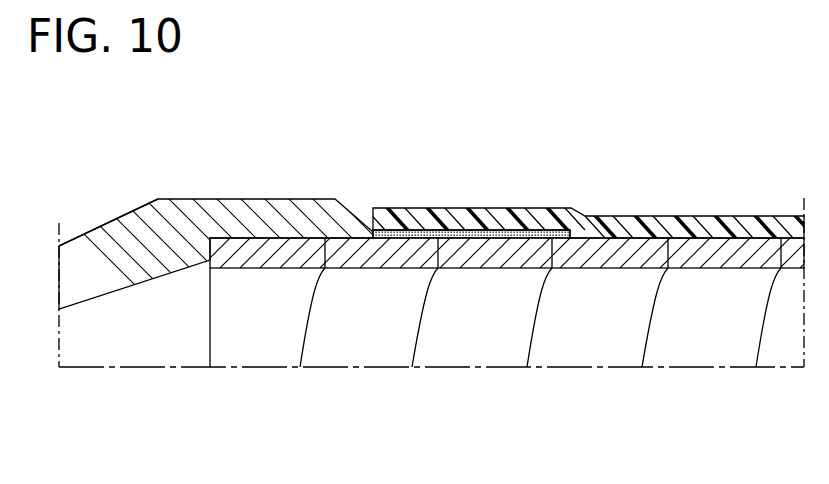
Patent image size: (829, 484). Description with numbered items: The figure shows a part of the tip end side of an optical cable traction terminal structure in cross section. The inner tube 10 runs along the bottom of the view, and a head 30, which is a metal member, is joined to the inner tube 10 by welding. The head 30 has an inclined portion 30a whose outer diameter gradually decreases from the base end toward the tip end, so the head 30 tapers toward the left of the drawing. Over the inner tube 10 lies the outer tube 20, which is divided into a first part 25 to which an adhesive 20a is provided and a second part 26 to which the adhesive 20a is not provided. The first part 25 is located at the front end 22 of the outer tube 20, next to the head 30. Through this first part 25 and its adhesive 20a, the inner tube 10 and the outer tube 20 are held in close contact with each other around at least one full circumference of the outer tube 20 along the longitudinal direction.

The inner tube 10 is at (483, 348).
The outer tube 20 is at (591, 161).
The adhesive 20a is at (470, 231).
The front end 22 is at (420, 213).
The first part 25 is at (522, 213).
The second part 26 is at (712, 227).
The head 30 is at (163, 175).
The inclined portion 30a is at (102, 230).